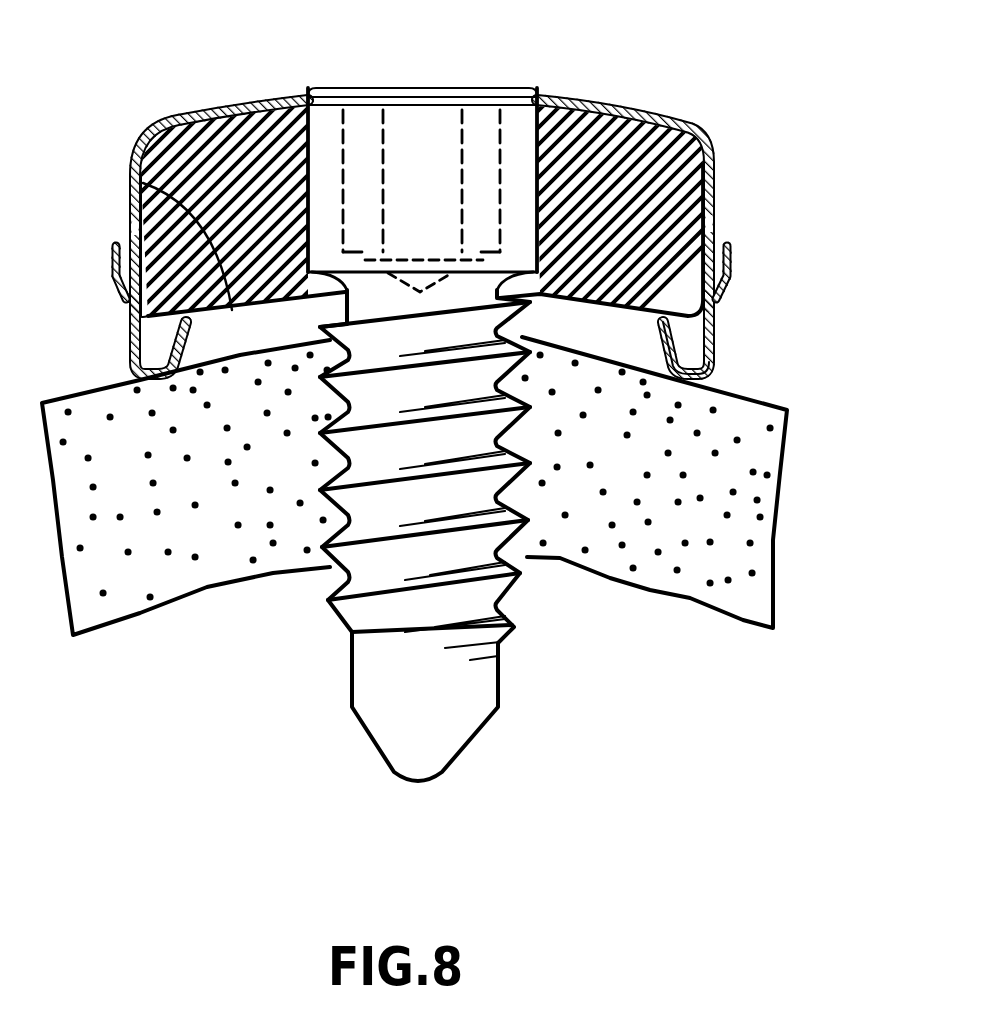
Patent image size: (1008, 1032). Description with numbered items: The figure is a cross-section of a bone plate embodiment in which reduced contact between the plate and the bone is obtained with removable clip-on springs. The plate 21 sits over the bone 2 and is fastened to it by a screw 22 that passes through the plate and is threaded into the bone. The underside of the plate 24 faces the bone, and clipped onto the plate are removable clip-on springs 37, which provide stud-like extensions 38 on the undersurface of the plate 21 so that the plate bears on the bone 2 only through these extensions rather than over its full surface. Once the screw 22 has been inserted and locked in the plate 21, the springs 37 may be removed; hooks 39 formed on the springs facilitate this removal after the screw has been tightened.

The bone 2 is at (102, 440).
The plate 21 is at (620, 108).
The screw 22 is at (382, 615).
The underside of the plate 24 is at (127, 187).
The clip-on springs 37 is at (722, 138).
The stud-like extensions 38 is at (716, 371).
The hooks 39 is at (736, 262).